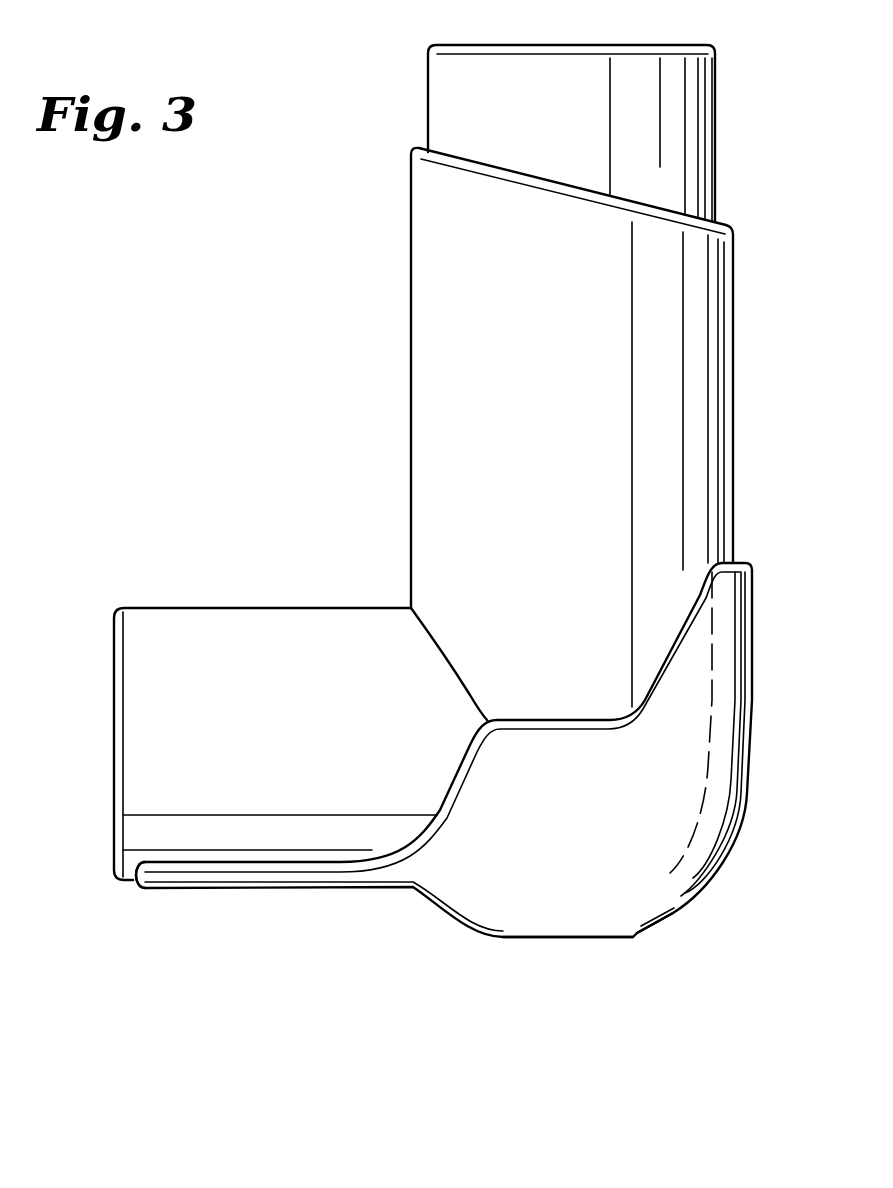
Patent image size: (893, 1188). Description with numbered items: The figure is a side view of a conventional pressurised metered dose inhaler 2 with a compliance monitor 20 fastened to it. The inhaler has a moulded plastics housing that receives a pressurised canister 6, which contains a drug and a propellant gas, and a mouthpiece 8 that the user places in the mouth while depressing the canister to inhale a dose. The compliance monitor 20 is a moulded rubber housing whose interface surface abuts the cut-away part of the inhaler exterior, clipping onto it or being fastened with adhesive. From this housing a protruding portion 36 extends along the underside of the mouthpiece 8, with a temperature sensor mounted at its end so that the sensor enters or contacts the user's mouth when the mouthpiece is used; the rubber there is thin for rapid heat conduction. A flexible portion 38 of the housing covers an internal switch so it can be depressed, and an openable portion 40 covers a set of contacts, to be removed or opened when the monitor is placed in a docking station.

The pressurised metered dose inhaler 2 is at (337, 417).
The pressurised canister 6 is at (447, 104).
The mouthpiece 8 is at (140, 723).
The compliance monitor 20 is at (474, 792).
The protruding portion 36 is at (150, 882).
The flexible portion 38 is at (562, 940).
The openable portion 40 is at (663, 927).